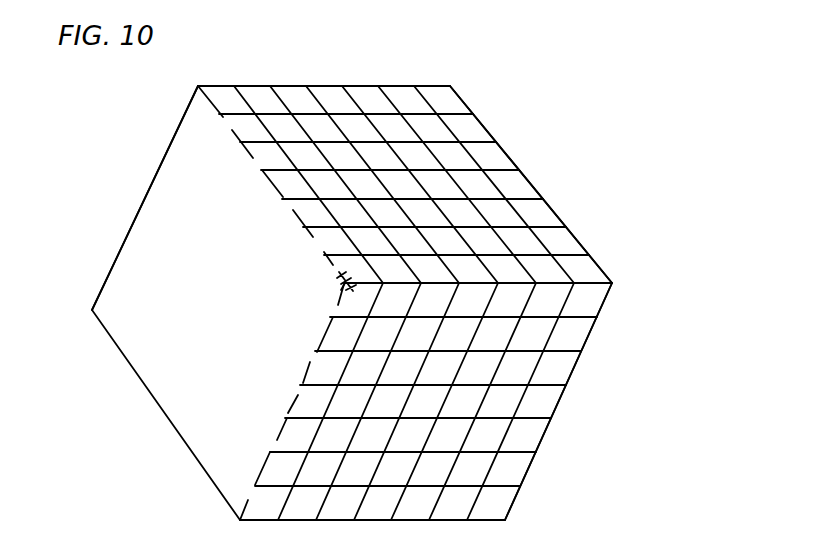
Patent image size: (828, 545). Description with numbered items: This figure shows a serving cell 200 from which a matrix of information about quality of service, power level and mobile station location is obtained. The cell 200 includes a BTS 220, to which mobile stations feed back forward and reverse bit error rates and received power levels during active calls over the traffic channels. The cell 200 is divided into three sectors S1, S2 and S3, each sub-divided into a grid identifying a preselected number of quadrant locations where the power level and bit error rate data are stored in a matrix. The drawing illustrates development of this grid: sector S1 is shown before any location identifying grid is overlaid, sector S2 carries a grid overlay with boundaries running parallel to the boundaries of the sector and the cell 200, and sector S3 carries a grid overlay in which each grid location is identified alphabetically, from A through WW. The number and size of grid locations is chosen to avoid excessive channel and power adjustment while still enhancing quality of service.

The cell 200 is at (572, 206).
The BTS 220 is at (340, 287).
The sector S1 is at (156, 149).
The sector S2 is at (501, 124).
The sector S3 is at (561, 423).